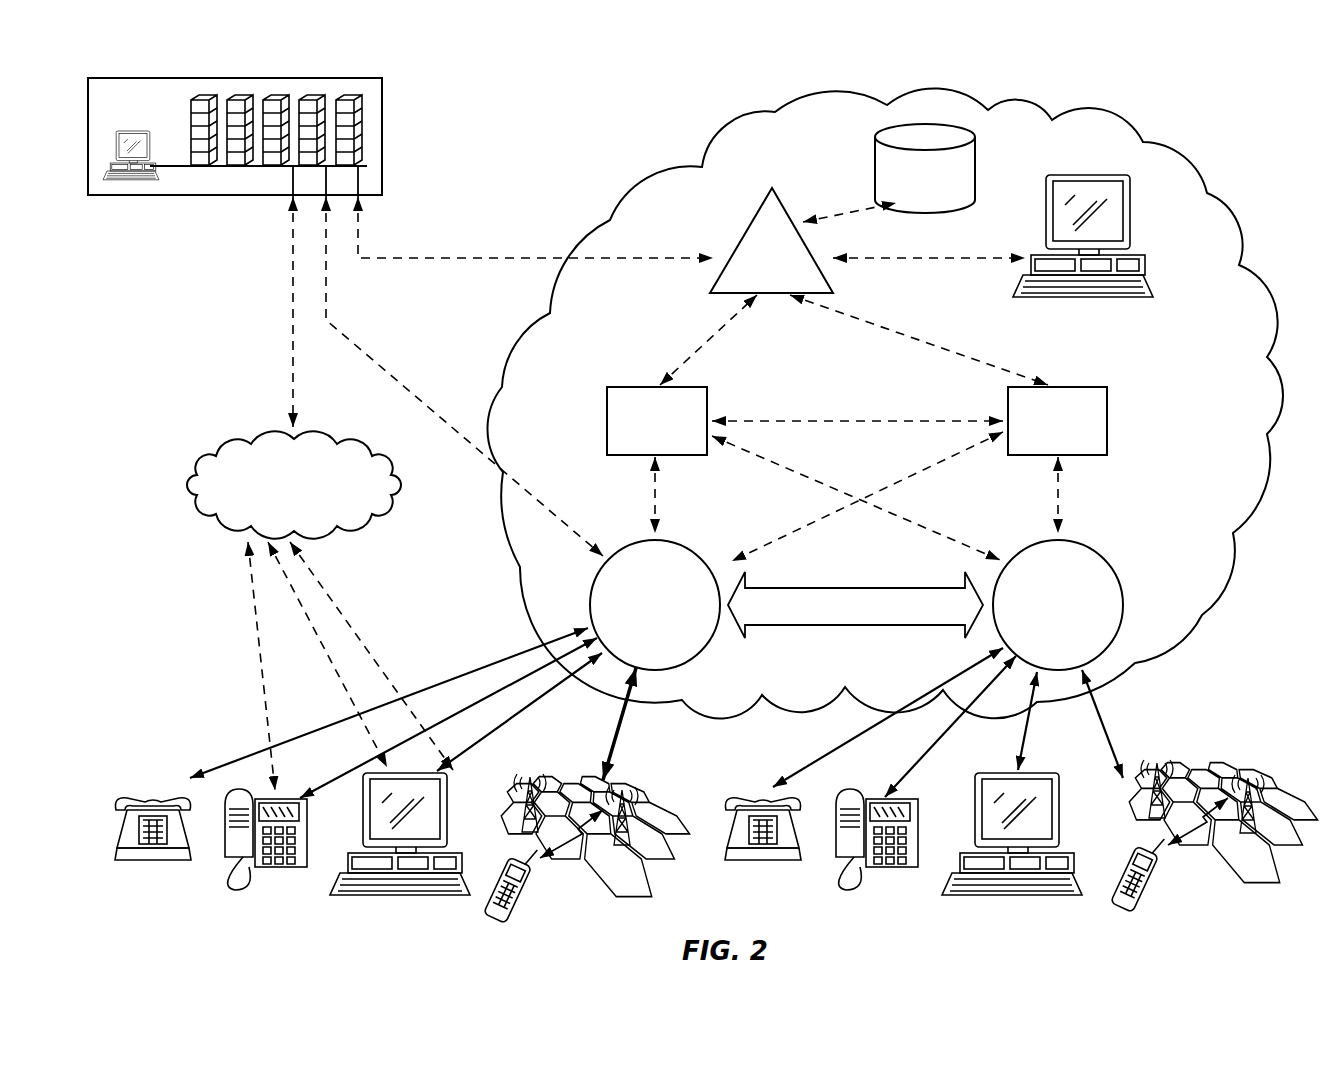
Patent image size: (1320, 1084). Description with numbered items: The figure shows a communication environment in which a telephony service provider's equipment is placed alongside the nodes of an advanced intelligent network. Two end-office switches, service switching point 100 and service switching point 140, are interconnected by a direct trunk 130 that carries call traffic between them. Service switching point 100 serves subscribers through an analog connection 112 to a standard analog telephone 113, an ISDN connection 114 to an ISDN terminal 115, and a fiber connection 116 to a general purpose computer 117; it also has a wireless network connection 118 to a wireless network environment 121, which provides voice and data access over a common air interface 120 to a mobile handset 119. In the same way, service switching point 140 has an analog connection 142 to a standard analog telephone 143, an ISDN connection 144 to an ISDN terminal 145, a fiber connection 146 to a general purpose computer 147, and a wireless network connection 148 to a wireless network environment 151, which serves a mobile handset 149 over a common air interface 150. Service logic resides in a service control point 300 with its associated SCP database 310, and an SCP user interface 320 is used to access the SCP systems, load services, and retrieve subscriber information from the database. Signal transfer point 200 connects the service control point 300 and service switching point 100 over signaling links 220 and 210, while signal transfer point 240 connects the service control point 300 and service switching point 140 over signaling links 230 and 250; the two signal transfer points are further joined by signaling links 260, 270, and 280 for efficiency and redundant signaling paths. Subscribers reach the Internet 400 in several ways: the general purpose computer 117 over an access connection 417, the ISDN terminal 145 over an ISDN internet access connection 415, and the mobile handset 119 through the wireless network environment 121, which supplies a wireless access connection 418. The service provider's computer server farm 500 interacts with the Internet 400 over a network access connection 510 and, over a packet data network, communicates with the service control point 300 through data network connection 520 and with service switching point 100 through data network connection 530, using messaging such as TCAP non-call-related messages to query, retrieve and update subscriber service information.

The service switching point (SSP) 100 is at (636, 630).
The service switching point (SSP) 140 is at (1039, 630).
The direct trunk 130 is at (855, 601).
The signal transfer point (STP) 200 is at (638, 445).
The signal transfer point (STP) 240 is at (1039, 445).
The service control point (SCP) 300 is at (753, 282).
The SCP database 310 is at (906, 183).
The SCP user interface 320 is at (1128, 209).
The Internet 400 is at (276, 513).
The computer server farm 500 is at (120, 109).
The network access connection 510 is at (291, 318).
The data network connection 520 is at (462, 258).
The data network connection 530 is at (386, 368).
The signaling link 210 is at (651, 506).
The signaling link 220 is at (714, 332).
The signaling link 230 is at (966, 353).
The signaling link 250 is at (1064, 506).
The signaling link 260 is at (824, 420).
The signaling link 270 is at (918, 521).
The signaling link 280 is at (910, 476).
The analog connection 112 is at (240, 764).
The standard analog telephone 113 is at (150, 865).
The ISDN connection 114 is at (346, 770).
The ISDN terminal 115 is at (282, 870).
The fiber connection 116 is at (514, 731).
The general purpose computer 117 is at (458, 809).
The wireless network connection 118 is at (627, 742).
The mobile handset 119 is at (534, 900).
The common air interface 120 is at (560, 848).
The wireless network environment 121 is at (644, 812).
The analog connection 142 is at (841, 747).
The standard analog telephone 143 is at (760, 865).
The ISDN connection 144 is at (921, 756).
The ISDN terminal 145 is at (893, 870).
The fiber connection 146 is at (1027, 742).
The general purpose computer 147 is at (1070, 812).
The wireless network connection 148 is at (1112, 741).
The mobile handset 149 is at (1160, 895).
The common air interface 150 is at (1188, 832).
The wireless network environment 151 is at (1272, 800).
The ISDN internet access connection 415 is at (261, 655).
The access connection 417 is at (338, 668).
The wireless access connection 418 is at (344, 604).